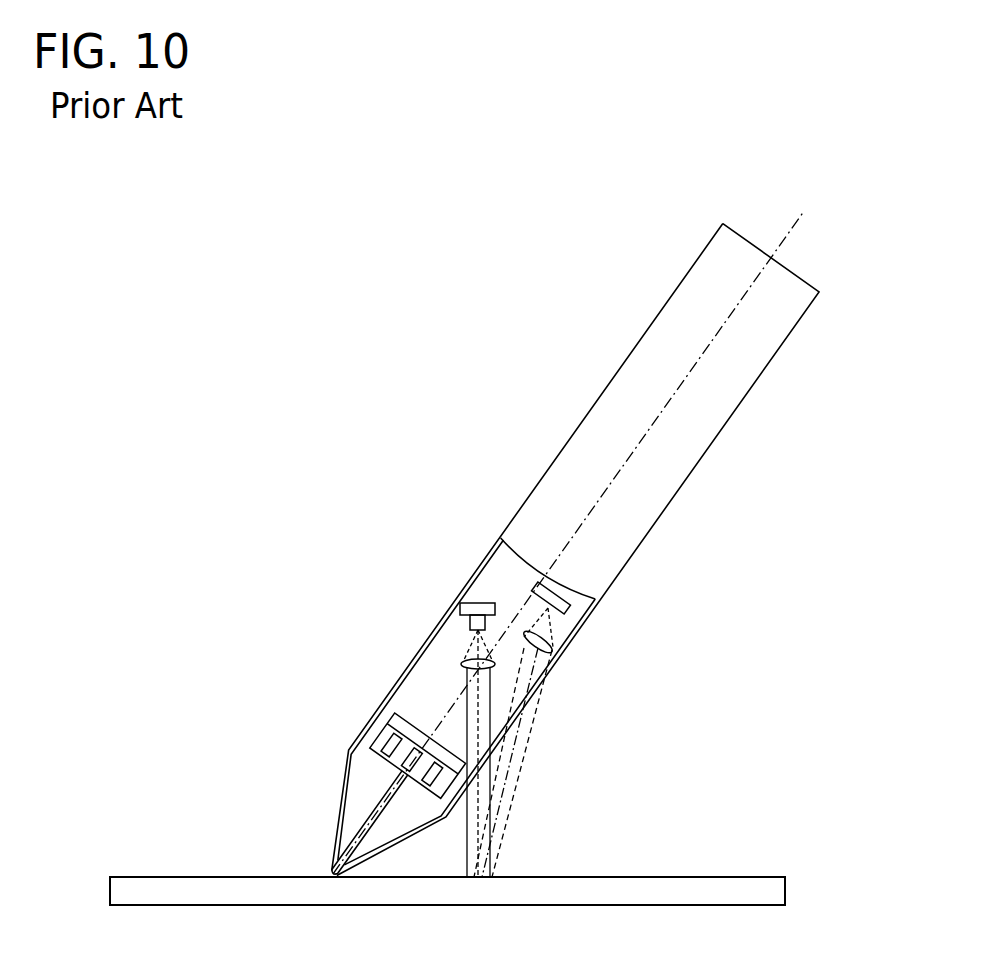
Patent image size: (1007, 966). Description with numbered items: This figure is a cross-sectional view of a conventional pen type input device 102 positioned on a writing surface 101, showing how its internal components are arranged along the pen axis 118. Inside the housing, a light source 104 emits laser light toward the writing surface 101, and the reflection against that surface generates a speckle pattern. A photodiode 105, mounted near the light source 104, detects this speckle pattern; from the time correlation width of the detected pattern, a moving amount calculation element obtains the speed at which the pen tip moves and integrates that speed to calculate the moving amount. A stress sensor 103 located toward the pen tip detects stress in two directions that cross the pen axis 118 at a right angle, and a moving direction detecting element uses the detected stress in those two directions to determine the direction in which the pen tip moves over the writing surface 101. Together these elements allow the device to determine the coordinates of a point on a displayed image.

The writing surface 101 is at (678, 877).
The pen type input device 102 is at (678, 482).
The stress sensor 103 is at (385, 730).
The light source 104 is at (460, 606).
The photodiode 105 is at (568, 607).
The pen axis 118 is at (787, 233).